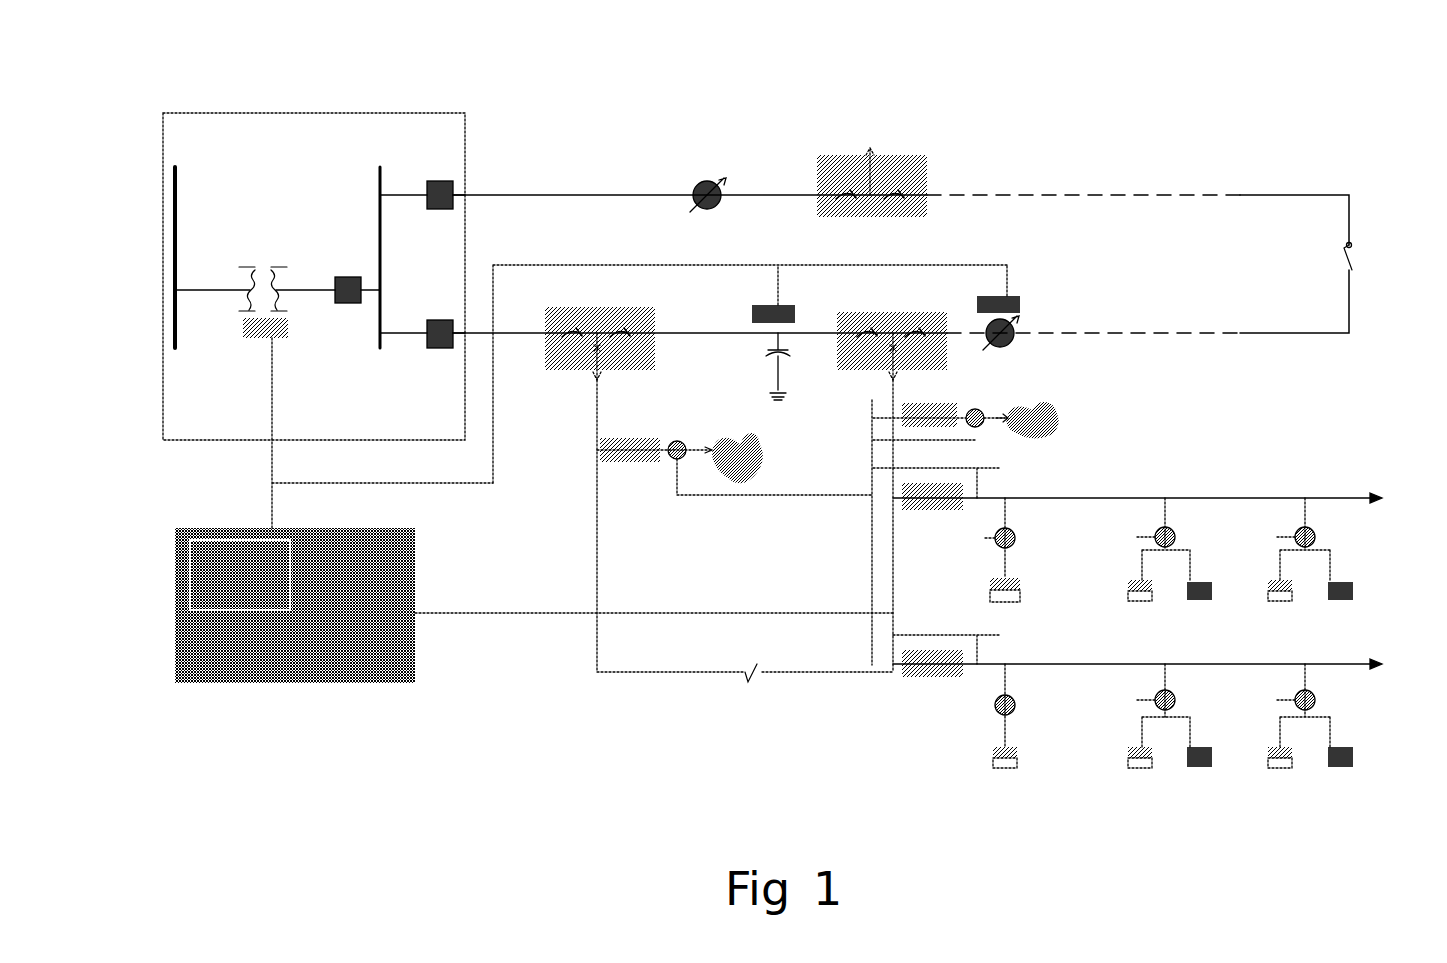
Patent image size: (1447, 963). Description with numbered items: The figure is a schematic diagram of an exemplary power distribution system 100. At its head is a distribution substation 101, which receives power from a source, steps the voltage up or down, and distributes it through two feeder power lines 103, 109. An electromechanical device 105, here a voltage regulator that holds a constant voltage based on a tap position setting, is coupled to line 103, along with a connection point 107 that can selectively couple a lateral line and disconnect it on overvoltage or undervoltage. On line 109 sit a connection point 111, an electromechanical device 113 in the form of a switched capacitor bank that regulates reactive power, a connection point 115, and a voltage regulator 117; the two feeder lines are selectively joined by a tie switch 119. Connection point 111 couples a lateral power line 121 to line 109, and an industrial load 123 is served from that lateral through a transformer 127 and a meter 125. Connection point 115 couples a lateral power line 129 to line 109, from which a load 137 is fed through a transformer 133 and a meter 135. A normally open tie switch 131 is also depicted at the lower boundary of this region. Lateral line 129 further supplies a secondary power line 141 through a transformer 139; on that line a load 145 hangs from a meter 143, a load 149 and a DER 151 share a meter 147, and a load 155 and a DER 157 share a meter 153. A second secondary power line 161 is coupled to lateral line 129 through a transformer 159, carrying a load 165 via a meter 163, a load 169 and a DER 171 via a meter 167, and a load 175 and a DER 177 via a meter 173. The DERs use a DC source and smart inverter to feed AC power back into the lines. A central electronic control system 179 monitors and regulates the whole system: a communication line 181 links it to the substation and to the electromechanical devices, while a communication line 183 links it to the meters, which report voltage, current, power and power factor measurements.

The power distribution system 100 is at (542, 782).
The distribution substation 101 is at (283, 110).
The feeder power line 103 is at (597, 194).
The electromechanical device 105 is at (700, 181).
The connection point 107 is at (845, 154).
The feeder power line 109 is at (517, 334).
The connection point 111 is at (597, 306).
The electromechanical device 113 is at (780, 381).
The connection point 115 is at (893, 311).
The voltage regulator 117 is at (1014, 324).
The tie switch 119 is at (1340, 250).
The lateral power line 121 is at (597, 553).
The load 123 is at (758, 468).
The meter 125 is at (677, 442).
The transformer 127 is at (638, 412).
The lateral power line 129 is at (893, 553).
The normally open tie switch 131 is at (757, 661).
The transformer 133 is at (928, 403).
The meter 135 is at (978, 409).
The load 137 is at (1052, 420).
The transformer 139 is at (925, 512).
The secondary power line 141 is at (987, 499).
The meter 143 is at (1017, 538).
The load 145 is at (1014, 597).
The meter 147 is at (1177, 537).
The load 149 is at (1137, 598).
The DER 151 is at (1200, 599).
The meter 153 is at (1317, 537).
The load 155 is at (1283, 598).
The DER 157 is at (1345, 599).
The transformer 159 is at (905, 680).
The secondary power line 161 is at (980, 666).
The meter 163 is at (1017, 705).
The load 165 is at (1012, 769).
The meter 167 is at (1177, 703).
The load 169 is at (1137, 769).
The DER 171 is at (1200, 769).
The meter 173 is at (1317, 703).
The load 175 is at (1282, 769).
The DER 177 is at (1340, 769).
The central electronic control system 179 is at (178, 683).
The communication line 181 is at (272, 483).
The communication line 183 is at (463, 607).